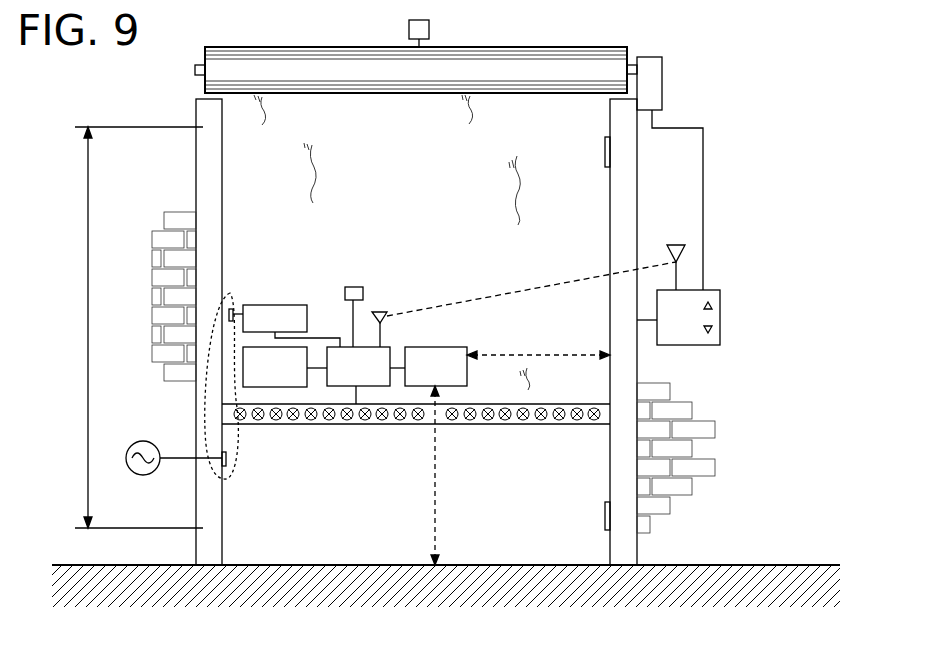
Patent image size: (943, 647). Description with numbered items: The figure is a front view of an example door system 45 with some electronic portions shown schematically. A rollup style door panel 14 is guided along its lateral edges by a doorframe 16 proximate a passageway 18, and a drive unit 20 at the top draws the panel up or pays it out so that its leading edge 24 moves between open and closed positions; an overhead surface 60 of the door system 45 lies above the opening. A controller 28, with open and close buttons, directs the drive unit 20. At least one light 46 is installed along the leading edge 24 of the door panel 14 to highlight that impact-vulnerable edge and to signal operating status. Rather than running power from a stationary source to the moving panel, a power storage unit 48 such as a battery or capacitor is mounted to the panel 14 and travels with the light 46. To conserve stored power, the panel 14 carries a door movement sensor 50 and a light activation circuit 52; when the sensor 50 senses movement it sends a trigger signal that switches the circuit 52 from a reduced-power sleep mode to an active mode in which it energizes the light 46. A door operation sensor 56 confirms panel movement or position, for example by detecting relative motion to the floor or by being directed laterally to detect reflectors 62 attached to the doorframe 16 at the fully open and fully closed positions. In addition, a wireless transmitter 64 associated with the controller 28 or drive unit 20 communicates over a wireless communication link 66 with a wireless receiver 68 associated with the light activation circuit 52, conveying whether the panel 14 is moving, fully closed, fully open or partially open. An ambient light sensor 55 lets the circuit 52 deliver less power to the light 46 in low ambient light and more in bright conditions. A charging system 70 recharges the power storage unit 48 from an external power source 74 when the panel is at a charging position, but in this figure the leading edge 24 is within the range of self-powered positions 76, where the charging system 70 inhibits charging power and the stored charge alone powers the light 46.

The door panel 14 is at (248, 174).
The doorframe 16 is at (196, 155).
The passageway 18 is at (357, 530).
The drive unit 20 is at (662, 80).
The leading edge 24 is at (472, 424).
The controller 28 is at (720, 318).
The door system 45 is at (752, 146).
The light 46 is at (398, 424).
The power storage unit 48 is at (275, 304).
The door movement sensor 50 is at (262, 379).
The light activation circuit 52 is at (345, 379).
The ambient light sensor 55 is at (353, 287).
The door operation sensor 56 is at (423, 379).
The overhead surface 60 is at (356, 93).
The reflectors 62 is at (605, 154).
The wireless transmitter 64 is at (672, 243).
The wireless communication link 66 is at (456, 302).
The wireless receiver 68 is at (380, 311).
The charging system 70 is at (240, 291).
The external power source 74 is at (138, 442).
The range of self-powered positions 76 is at (88, 327).